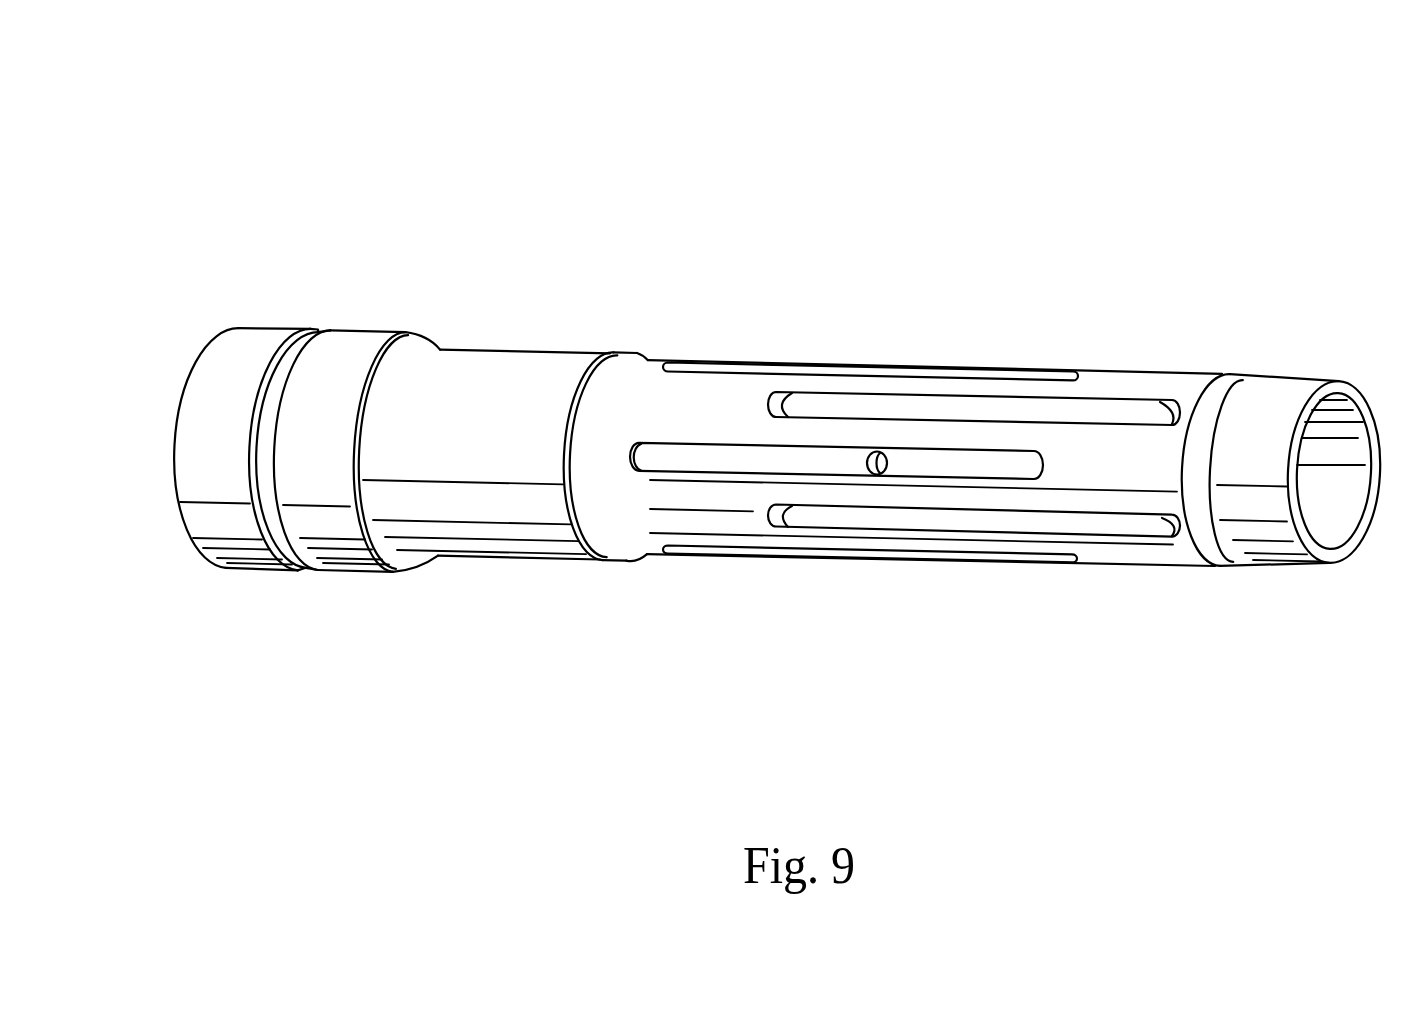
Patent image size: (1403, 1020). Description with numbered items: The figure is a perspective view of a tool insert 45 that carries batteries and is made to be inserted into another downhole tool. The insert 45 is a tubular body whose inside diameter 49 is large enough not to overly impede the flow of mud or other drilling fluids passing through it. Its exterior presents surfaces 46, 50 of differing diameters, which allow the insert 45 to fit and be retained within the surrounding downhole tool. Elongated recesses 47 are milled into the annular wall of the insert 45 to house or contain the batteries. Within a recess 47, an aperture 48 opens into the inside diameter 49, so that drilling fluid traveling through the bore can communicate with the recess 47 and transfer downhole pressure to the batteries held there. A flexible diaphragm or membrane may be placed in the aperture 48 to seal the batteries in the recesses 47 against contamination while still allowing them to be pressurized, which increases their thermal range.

The tool insert 45 is at (578, 165).
The surface 46 is at (652, 358).
The recess 47 is at (888, 408).
The aperture 48 is at (1177, 405).
The inside diameter 49 is at (1327, 443).
The surface 50 is at (372, 330).